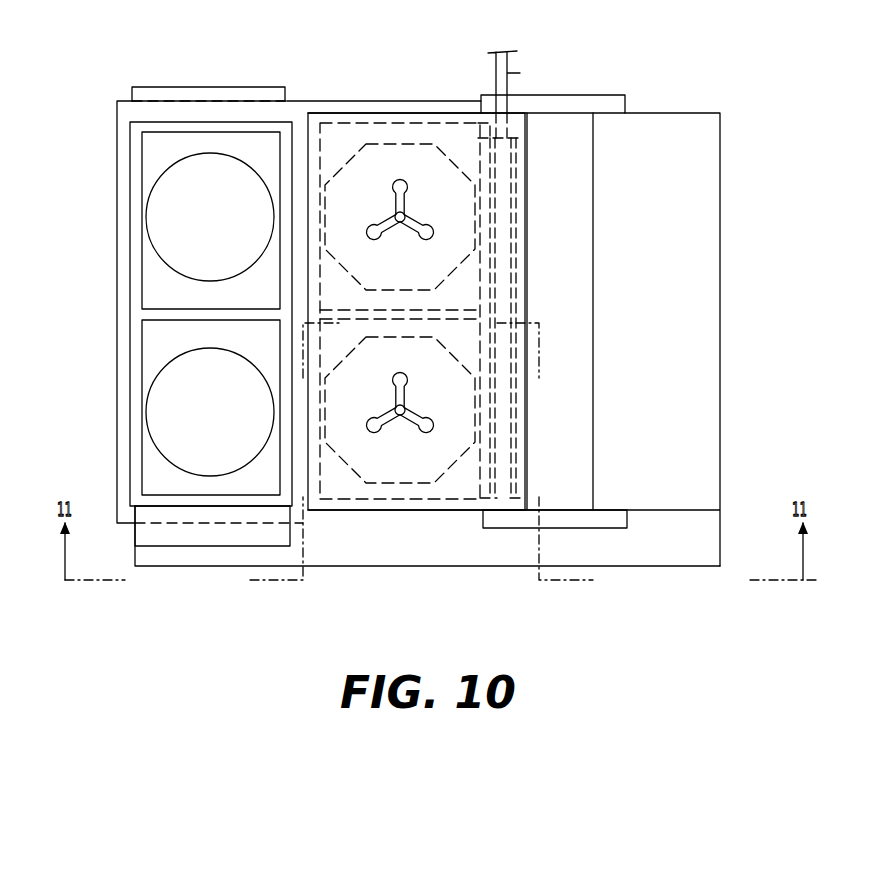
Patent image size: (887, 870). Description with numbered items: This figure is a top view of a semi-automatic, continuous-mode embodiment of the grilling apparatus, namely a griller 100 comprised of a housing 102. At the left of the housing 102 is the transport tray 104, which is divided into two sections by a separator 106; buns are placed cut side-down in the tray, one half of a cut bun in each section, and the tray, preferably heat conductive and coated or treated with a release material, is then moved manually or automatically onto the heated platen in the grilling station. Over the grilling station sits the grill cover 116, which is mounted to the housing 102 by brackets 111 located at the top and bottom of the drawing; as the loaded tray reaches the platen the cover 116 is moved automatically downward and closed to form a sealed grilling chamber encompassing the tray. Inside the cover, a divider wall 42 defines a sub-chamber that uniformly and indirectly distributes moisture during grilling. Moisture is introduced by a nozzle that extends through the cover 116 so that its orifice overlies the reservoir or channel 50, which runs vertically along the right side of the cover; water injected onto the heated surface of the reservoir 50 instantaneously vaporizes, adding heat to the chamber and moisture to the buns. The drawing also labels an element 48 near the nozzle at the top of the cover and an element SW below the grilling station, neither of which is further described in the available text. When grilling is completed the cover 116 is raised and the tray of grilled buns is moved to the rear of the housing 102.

The griller 100 is at (202, 72).
The housing 102 is at (690, 133).
The transport tray 104 is at (128, 283).
The separator 106 is at (155, 313).
The brackets 111 is at (597, 102).
The grill cover 116 is at (350, 135).
The divider wall 42 is at (477, 140).
The shaft 48 is at (520, 73).
The reservoir or channel 50 is at (503, 226).
The switch SW is at (409, 505).